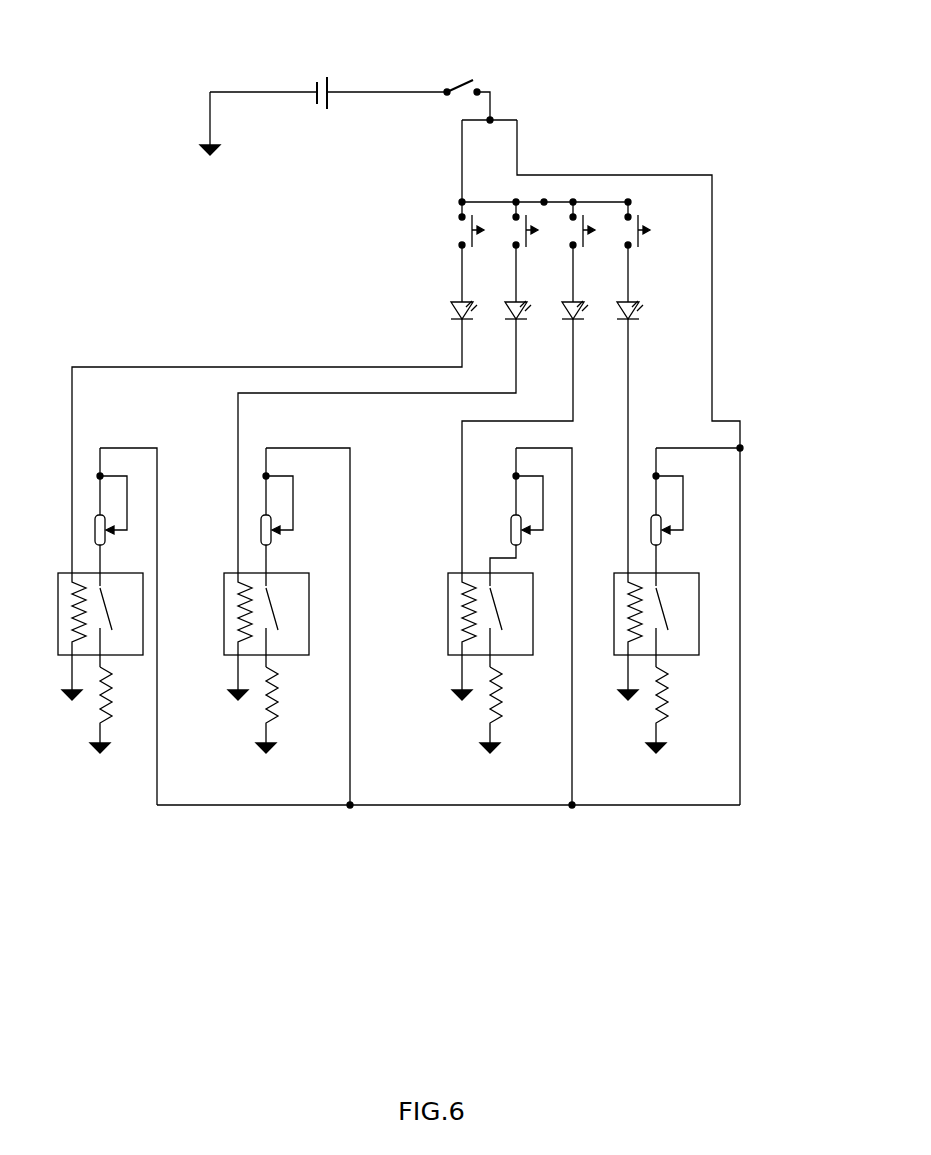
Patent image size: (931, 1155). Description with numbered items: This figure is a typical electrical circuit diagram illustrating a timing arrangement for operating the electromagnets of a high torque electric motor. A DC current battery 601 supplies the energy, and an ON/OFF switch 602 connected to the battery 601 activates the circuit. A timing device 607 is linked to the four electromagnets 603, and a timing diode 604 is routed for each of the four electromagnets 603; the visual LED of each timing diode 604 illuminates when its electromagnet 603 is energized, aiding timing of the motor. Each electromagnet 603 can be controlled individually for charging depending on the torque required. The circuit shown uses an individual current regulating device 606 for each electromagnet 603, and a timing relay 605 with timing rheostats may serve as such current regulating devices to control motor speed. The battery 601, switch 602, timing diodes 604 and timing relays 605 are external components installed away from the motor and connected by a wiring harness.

The DC current battery 601 is at (317, 77).
The switch 602 is at (480, 77).
The electromagnet 603 is at (685, 683).
The timing diode 604 is at (450, 314).
The timing relay 605 is at (699, 605).
The current regulating device 606 is at (628, 270).
The timing device 607 is at (601, 202).